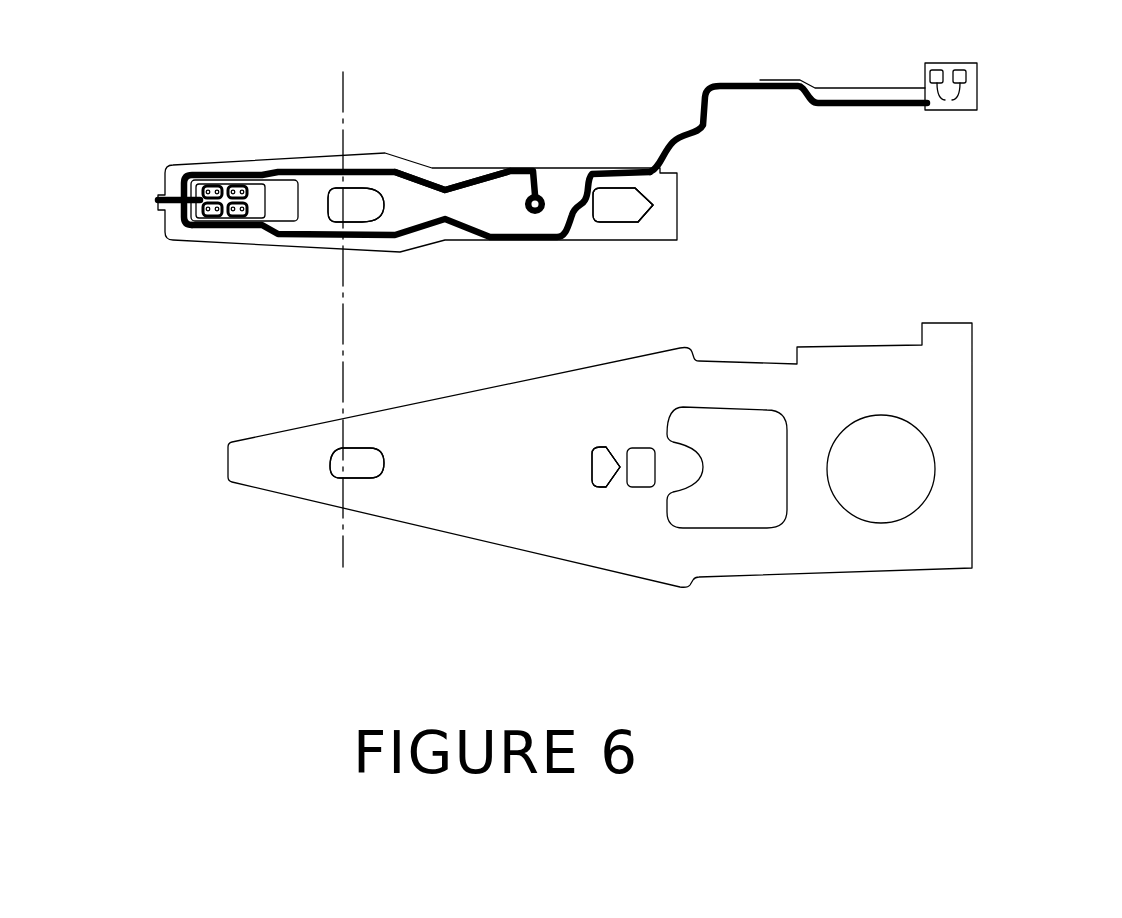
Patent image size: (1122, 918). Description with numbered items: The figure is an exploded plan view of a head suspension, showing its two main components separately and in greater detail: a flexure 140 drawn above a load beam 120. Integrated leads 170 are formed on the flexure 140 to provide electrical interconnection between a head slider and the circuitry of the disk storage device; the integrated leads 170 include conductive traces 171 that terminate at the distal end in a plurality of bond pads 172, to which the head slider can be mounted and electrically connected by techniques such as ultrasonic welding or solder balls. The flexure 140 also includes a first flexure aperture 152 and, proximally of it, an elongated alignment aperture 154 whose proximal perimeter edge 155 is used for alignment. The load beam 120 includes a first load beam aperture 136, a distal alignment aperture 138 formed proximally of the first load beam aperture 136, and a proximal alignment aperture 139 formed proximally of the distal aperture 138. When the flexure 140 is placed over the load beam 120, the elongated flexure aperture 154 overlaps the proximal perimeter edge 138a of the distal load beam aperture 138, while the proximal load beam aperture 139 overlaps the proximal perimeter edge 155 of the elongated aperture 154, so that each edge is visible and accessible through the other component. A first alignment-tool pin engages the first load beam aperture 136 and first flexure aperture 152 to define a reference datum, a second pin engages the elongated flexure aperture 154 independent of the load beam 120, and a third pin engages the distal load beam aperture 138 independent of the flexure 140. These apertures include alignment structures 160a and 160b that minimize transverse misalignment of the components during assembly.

The load beam 120 is at (923, 403).
The first load beam aperture 136 is at (362, 462).
The distal alignment aperture 138 is at (601, 463).
The proximal perimeter edge 138a is at (615, 475).
The proximal alignment aperture 139 is at (643, 456).
The flexure 140 is at (466, 197).
The first flexure aperture 152 is at (375, 207).
The elongated alignment aperture 154 is at (610, 213).
The proximal perimeter edge 155 is at (644, 213).
The alignment structure 160a is at (650, 212).
The alignment structure 160b is at (338, 203).
The integrated leads 170 is at (762, 84).
The conductive traces 171 is at (410, 178).
The bond pads 172 is at (221, 272).